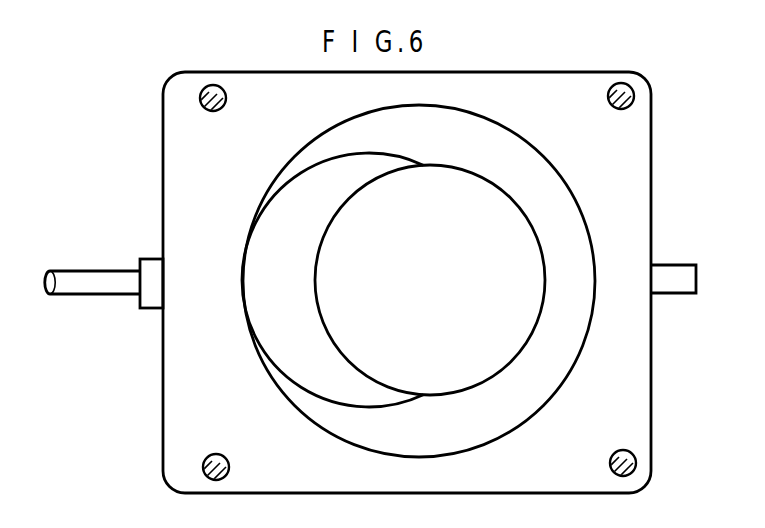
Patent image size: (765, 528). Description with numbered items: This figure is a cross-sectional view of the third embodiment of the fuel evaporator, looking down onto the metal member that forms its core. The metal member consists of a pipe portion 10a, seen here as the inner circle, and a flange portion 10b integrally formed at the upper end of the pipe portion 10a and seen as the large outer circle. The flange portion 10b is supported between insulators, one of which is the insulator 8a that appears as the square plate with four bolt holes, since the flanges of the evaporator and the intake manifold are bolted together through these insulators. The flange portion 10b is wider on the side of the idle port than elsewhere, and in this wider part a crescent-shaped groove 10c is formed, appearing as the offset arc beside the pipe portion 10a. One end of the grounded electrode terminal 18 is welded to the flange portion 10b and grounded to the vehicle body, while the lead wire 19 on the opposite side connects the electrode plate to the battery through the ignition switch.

The insulator 8a is at (183, 113).
The pipe portion 10a is at (494, 372).
The flange portion 10b is at (523, 170).
The crescent-shaped groove 10c is at (280, 323).
The grounded electrode terminal 18 is at (674, 278).
The lead wire 19 is at (81, 283).